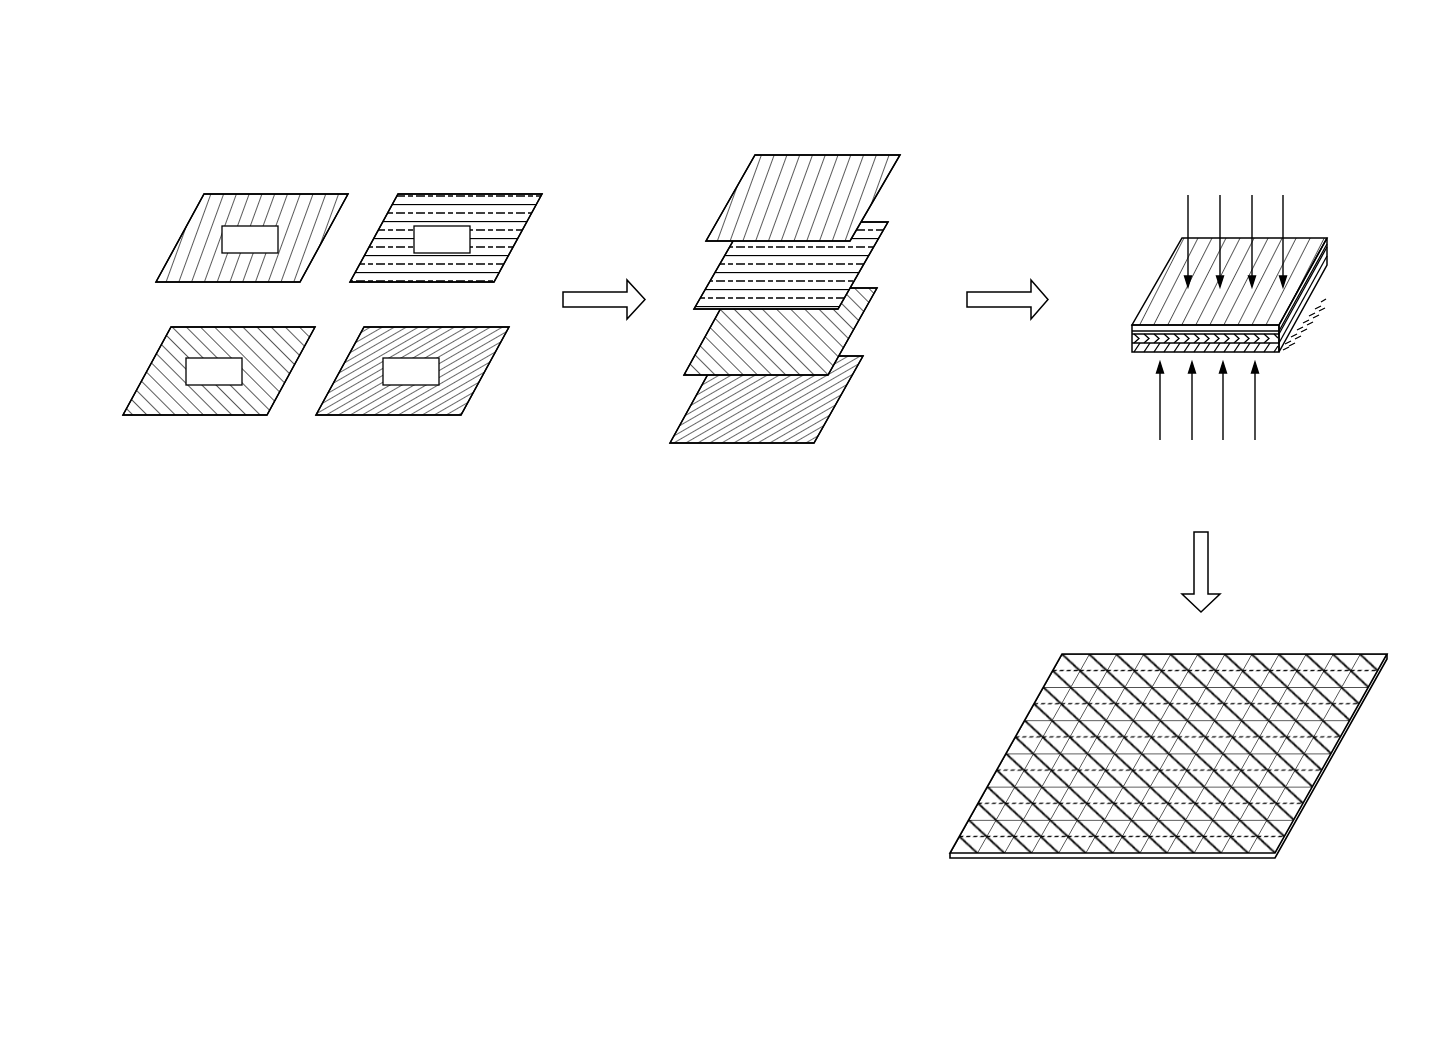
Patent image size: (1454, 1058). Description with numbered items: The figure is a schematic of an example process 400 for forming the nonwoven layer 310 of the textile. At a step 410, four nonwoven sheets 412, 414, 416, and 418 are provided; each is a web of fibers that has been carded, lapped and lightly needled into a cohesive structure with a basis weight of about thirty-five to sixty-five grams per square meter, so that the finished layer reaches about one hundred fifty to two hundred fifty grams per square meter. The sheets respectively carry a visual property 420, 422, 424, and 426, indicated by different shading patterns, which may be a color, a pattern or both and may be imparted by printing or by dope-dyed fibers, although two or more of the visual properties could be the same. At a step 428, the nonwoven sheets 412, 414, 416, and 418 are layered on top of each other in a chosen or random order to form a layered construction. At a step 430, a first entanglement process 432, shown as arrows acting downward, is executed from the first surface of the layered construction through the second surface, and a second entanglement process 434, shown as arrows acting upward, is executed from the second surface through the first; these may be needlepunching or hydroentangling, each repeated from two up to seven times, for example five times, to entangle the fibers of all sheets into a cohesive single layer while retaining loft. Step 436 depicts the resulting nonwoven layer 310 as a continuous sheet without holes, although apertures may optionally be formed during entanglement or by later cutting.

The process 400 is at (125, 156).
The step of providing nonwoven sheets 410 is at (333, 322).
The nonwoven sheet 412 is at (252, 215).
The nonwoven sheet 414 is at (449, 215).
The nonwoven sheet 416 is at (216, 395).
The nonwoven sheet 418 is at (412, 395).
The visual property 420 is at (275, 251).
The visual property 422 is at (467, 251).
The visual property 424 is at (219, 371).
The visual property 426 is at (436, 383).
The step of layering nonwoven sheets 428 is at (850, 385).
The step of entangling layered construction 430 is at (1271, 302).
The first entanglement process 432 is at (1302, 211).
The second entanglement process 434 is at (1281, 395).
The step depicting formed nonwoven layer 436 is at (1152, 907).
The nonwoven layer 310 is at (1194, 753).